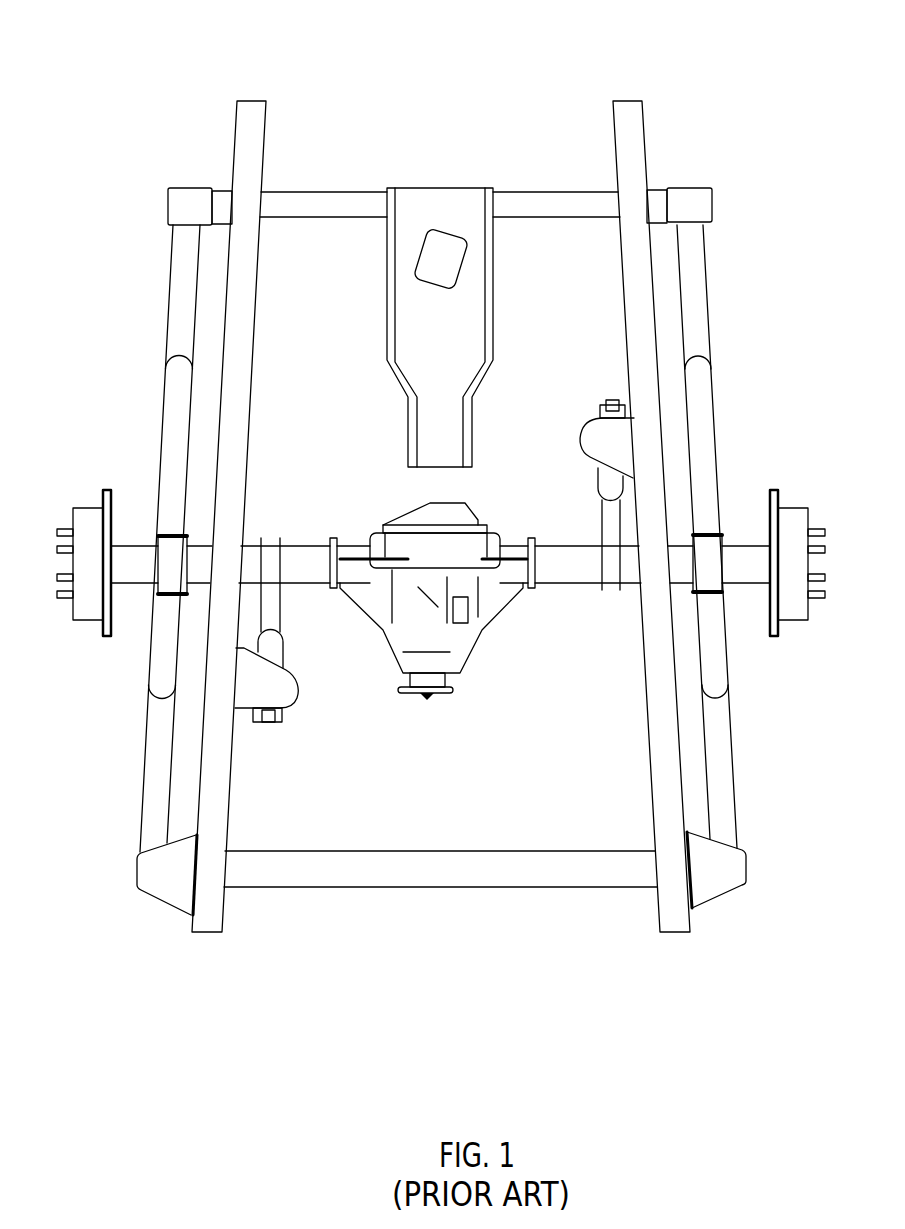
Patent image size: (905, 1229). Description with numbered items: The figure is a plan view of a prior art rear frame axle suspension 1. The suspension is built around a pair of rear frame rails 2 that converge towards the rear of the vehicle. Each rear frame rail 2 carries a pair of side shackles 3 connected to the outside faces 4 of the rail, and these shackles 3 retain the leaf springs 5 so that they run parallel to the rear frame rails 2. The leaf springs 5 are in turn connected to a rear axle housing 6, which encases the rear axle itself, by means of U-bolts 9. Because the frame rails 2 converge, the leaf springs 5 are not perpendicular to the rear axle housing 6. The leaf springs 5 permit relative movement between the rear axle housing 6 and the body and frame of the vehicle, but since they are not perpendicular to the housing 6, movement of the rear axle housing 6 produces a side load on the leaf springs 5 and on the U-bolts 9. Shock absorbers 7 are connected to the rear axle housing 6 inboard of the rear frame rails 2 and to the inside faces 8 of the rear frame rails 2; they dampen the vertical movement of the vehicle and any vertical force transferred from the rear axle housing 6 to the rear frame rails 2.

The rear frame axle suspension 1 is at (570, 68).
The rear frame rails 2 is at (230, 130).
The side shackles 3 is at (167, 204).
The outside faces 4 is at (222, 342).
The leaf springs 5 is at (182, 390).
The rear axle housing 6 is at (303, 536).
The shock absorbers 7 is at (285, 650).
The inside faces 8 is at (237, 623).
The U-bolts 9 is at (172, 535).